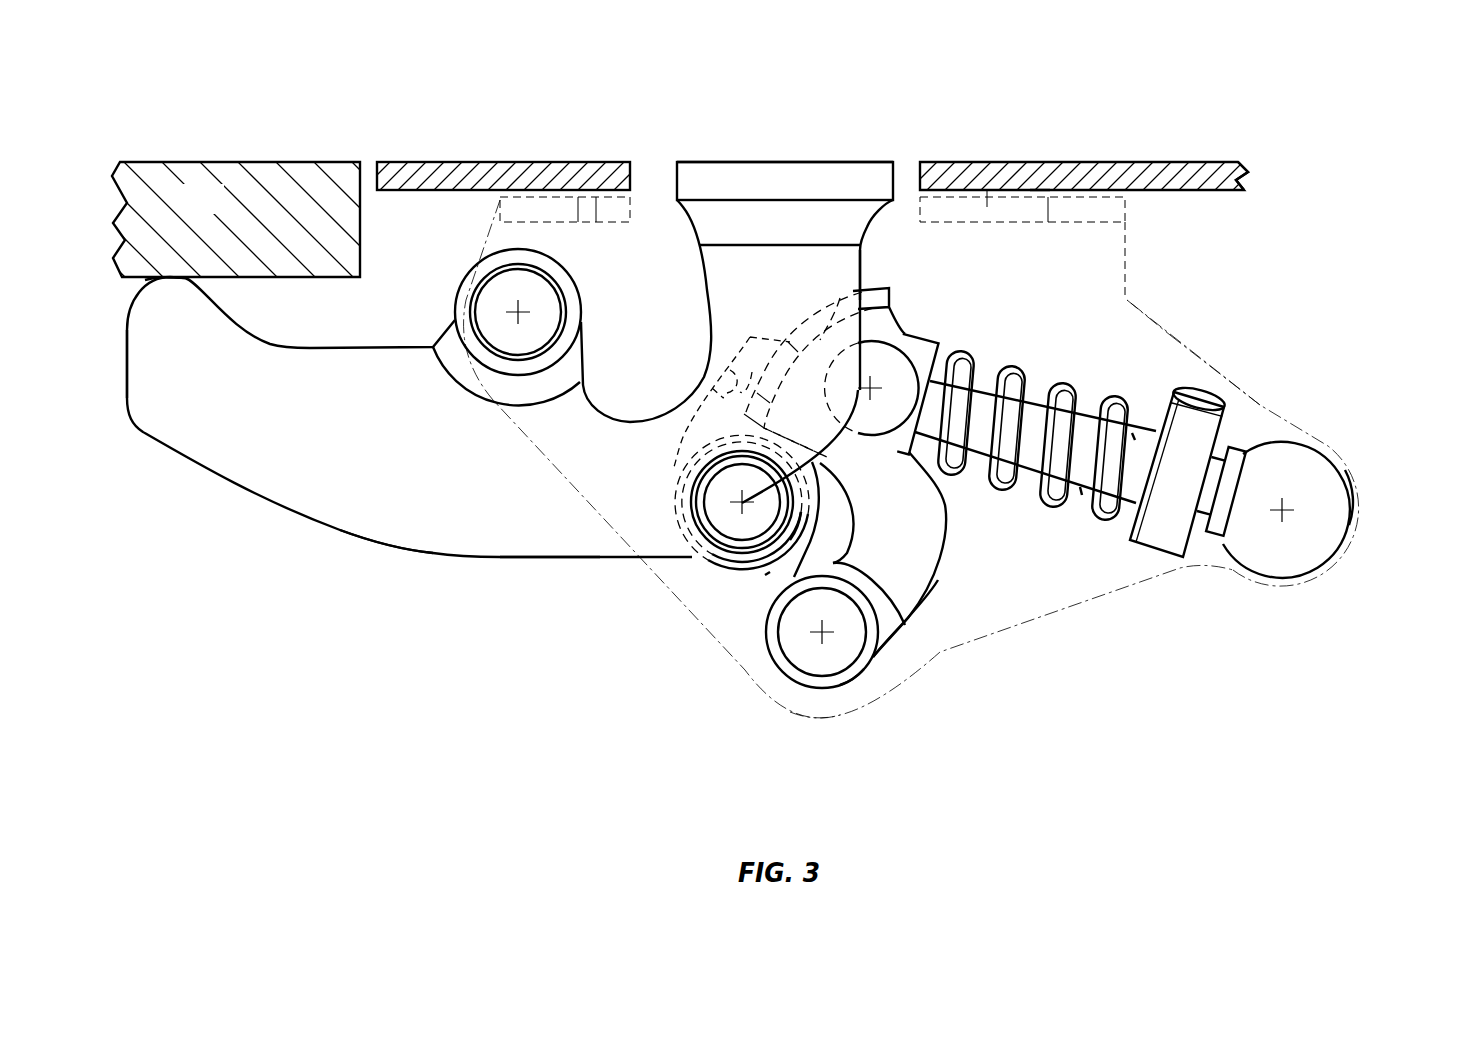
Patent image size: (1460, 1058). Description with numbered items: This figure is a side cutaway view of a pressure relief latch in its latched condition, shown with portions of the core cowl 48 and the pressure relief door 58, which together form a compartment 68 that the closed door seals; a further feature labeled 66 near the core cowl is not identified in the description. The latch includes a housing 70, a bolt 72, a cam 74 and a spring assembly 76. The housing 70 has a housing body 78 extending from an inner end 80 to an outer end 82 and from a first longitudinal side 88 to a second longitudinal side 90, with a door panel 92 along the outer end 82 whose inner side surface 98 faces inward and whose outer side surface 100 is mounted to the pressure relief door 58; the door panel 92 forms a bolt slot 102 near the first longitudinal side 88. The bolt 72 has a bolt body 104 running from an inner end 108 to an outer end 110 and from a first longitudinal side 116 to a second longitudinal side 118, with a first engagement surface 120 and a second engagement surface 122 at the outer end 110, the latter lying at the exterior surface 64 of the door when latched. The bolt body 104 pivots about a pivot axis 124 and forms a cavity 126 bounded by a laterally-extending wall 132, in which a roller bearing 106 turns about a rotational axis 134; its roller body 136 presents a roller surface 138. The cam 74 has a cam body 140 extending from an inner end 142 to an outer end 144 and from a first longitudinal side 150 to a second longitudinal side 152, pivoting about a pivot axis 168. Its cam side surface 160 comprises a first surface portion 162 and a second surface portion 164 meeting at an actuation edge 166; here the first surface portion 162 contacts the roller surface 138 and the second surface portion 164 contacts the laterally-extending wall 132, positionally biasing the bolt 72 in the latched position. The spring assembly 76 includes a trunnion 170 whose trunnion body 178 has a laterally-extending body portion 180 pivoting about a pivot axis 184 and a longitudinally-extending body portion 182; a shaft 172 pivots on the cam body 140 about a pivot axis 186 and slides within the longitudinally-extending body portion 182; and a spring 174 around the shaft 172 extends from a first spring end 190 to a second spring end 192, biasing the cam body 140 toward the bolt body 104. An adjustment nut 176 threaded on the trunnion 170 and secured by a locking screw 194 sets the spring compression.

The core cowl 48 is at (165, 175).
The housing wall 66 is at (290, 162).
The outer side surface 100 is at (558, 203).
The pressure relief door 58 is at (1170, 176).
The exterior surface 64 is at (1218, 162).
The door panel 92 is at (988, 190).
The outer end 82 is at (1043, 186).
The inner side surface 98 is at (1017, 225).
The outer end 110 is at (703, 149).
The second engagement surface 122 is at (826, 162).
The bolt slot 102 is at (889, 210).
The second longitudinal side 118 is at (874, 257).
The bolt 72 is at (346, 556).
The compartment 68 is at (442, 704).
The first longitudinal side 116 is at (121, 357).
The first engagement surface 120 is at (167, 277).
The bolt body 104 is at (440, 513).
The inner end 108 is at (529, 570).
The first longitudinal side 88 is at (468, 253).
The pivot axis 124 is at (519, 312).
The rotational axis 134 is at (742, 503).
The roller body 136 is at (688, 485).
The actuation edge 166 is at (700, 440).
The cavity 126 is at (814, 302).
The cam side surface 160 is at (840, 298).
The second surface portion 164 is at (752, 372).
The laterally-extending wall 132 is at (712, 388).
The first surface portion 162 is at (820, 505).
The cam 74 is at (929, 621).
The outer end 144 is at (885, 280).
The second longitudinal side 152 is at (949, 551).
The cam body 140 is at (921, 583).
The roller surface 138 is at (738, 568).
The roller bearing 106 is at (712, 576).
The first longitudinal side 150 is at (752, 631).
The pivot axis 168 is at (822, 632).
The inner end 142 is at (836, 704).
The inner end 80 is at (812, 726).
The pivot axis 186 is at (870, 388).
The first spring end 190 is at (915, 440).
The shaft 172 is at (975, 400).
The spring 174 is at (1057, 403).
The longitudinally-extending body portion 182 is at (1080, 490).
The trunnion body 178 is at (1134, 432).
The adjustment nut 176 is at (1165, 548).
The second spring end 192 is at (1111, 510).
The locking screw 194 is at (1219, 392).
The trunnion 170 is at (1244, 431).
The second longitudinal side 90 is at (1373, 543).
The laterally-extending body portion 180 is at (1347, 470).
The pivot axis 184 is at (1284, 511).
The housing 70 is at (1053, 632).
The spring assembly 76 is at (1119, 387).
The housing body 78 is at (1167, 340).